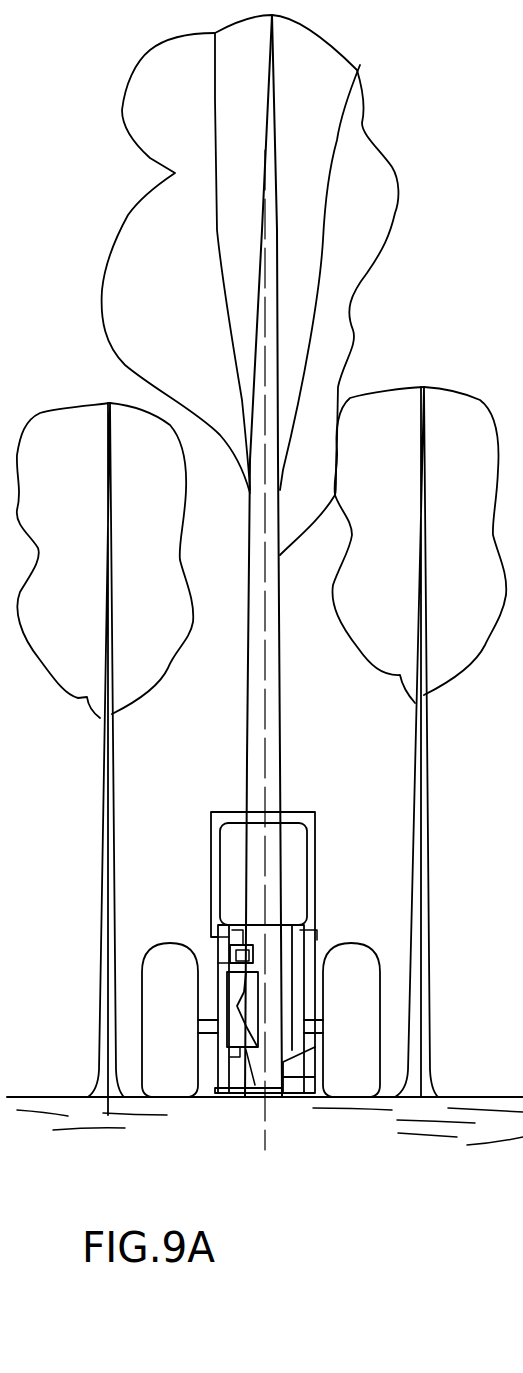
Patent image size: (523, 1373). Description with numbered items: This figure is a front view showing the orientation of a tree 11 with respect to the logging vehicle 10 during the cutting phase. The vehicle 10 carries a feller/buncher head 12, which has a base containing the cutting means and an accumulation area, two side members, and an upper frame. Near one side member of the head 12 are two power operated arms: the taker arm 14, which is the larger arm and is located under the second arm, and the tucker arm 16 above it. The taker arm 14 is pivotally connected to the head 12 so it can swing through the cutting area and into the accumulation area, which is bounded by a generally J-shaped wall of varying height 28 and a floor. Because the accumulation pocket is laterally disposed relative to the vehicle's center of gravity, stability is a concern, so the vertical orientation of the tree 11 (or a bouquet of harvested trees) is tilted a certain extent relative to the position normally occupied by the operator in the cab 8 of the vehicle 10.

The cab 8 is at (297, 862).
The logging vehicle 10 is at (211, 890).
The harvested trees 11 is at (104, 795).
The feller/buncher head 12 is at (221, 962).
The taker arm 14 is at (233, 1108).
The tucker arm 16 is at (253, 955).
The J-shaped wall of varying height 28 is at (295, 1104).